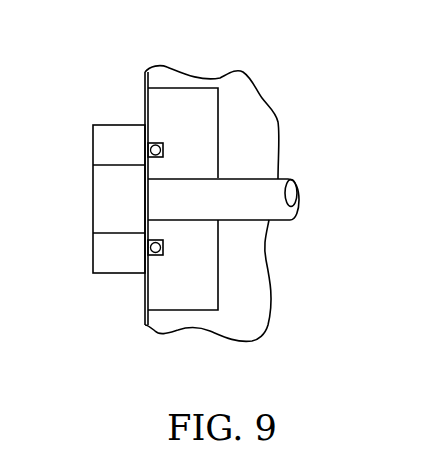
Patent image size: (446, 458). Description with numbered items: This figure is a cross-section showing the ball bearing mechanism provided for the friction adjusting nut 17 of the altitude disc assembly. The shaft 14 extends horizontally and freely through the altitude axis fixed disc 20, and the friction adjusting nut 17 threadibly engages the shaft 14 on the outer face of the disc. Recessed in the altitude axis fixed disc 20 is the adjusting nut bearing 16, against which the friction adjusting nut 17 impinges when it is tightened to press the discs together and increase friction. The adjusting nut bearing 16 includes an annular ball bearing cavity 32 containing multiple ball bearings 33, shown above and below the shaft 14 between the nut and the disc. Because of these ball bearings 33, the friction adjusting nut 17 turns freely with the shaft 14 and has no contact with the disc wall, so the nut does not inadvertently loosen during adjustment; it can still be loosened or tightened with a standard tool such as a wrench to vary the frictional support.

The shaft 14 is at (228, 210).
The adjusting nut bearing 16 is at (183, 100).
The friction adjusting nut 17 is at (103, 127).
The altitude axis fixed disc 20 is at (253, 118).
The annular ball bearing cavity 32 is at (160, 142).
The ball bearings 33 is at (147, 148).